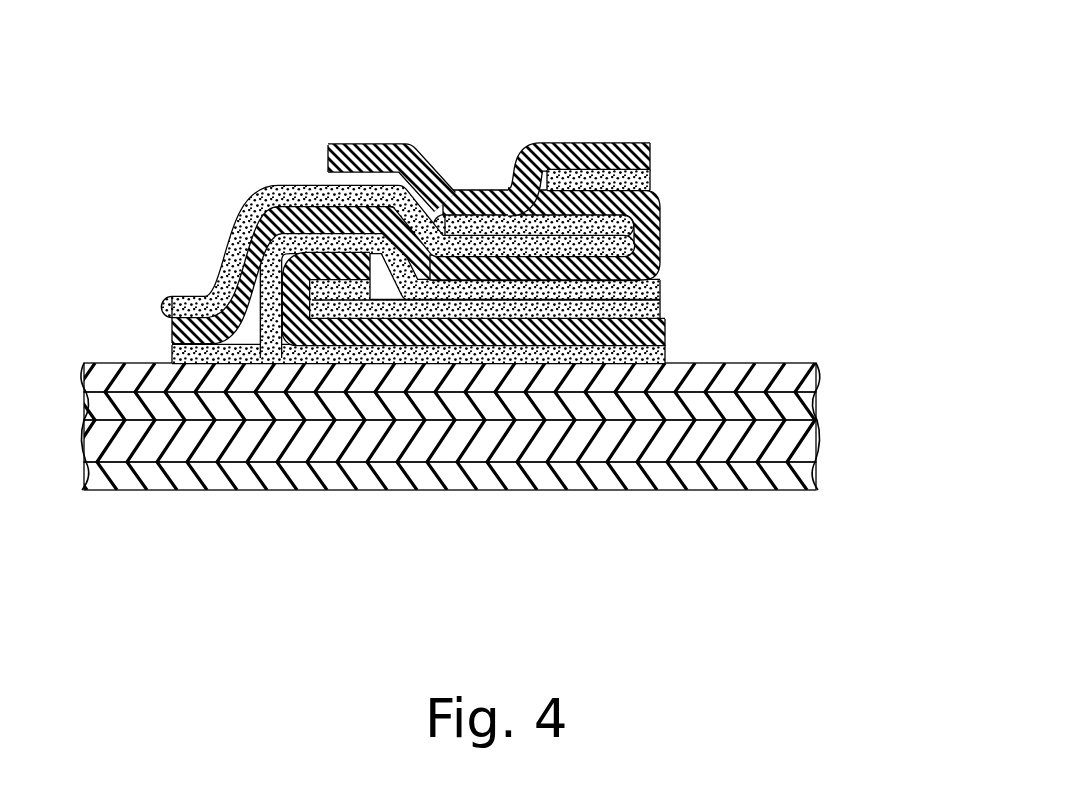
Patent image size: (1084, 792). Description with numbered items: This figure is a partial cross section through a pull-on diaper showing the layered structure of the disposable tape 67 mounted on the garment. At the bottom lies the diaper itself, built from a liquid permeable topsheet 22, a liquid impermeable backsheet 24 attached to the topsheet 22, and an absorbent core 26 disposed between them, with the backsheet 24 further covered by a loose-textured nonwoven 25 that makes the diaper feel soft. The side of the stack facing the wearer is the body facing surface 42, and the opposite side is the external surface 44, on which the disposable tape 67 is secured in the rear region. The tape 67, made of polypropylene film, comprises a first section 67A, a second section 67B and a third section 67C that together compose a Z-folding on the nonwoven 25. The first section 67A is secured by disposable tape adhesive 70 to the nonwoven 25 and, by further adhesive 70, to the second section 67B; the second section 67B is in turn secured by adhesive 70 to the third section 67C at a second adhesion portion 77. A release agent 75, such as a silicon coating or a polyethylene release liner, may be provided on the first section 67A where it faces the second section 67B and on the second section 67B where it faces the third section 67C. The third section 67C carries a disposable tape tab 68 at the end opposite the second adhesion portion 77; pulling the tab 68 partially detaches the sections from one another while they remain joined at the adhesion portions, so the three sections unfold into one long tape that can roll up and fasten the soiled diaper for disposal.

The liquid permeable topsheet 22 is at (815, 480).
The liquid impermeable backsheet 24 is at (815, 408).
The nonwoven 25 is at (815, 380).
The absorbent core 26 is at (815, 445).
The body facing surface 42 is at (489, 419).
The external surface 44 is at (489, 387).
The disposable tape 67 is at (427, 183).
The first section 67A is at (666, 332).
The second section 67B is at (664, 226).
The third section 67C is at (585, 145).
The disposable tape tab 68 is at (368, 145).
The disposable tape adhesive 70 is at (478, 215).
The release agent 75 is at (235, 222).
The second adhesion portion 77 is at (678, 188).